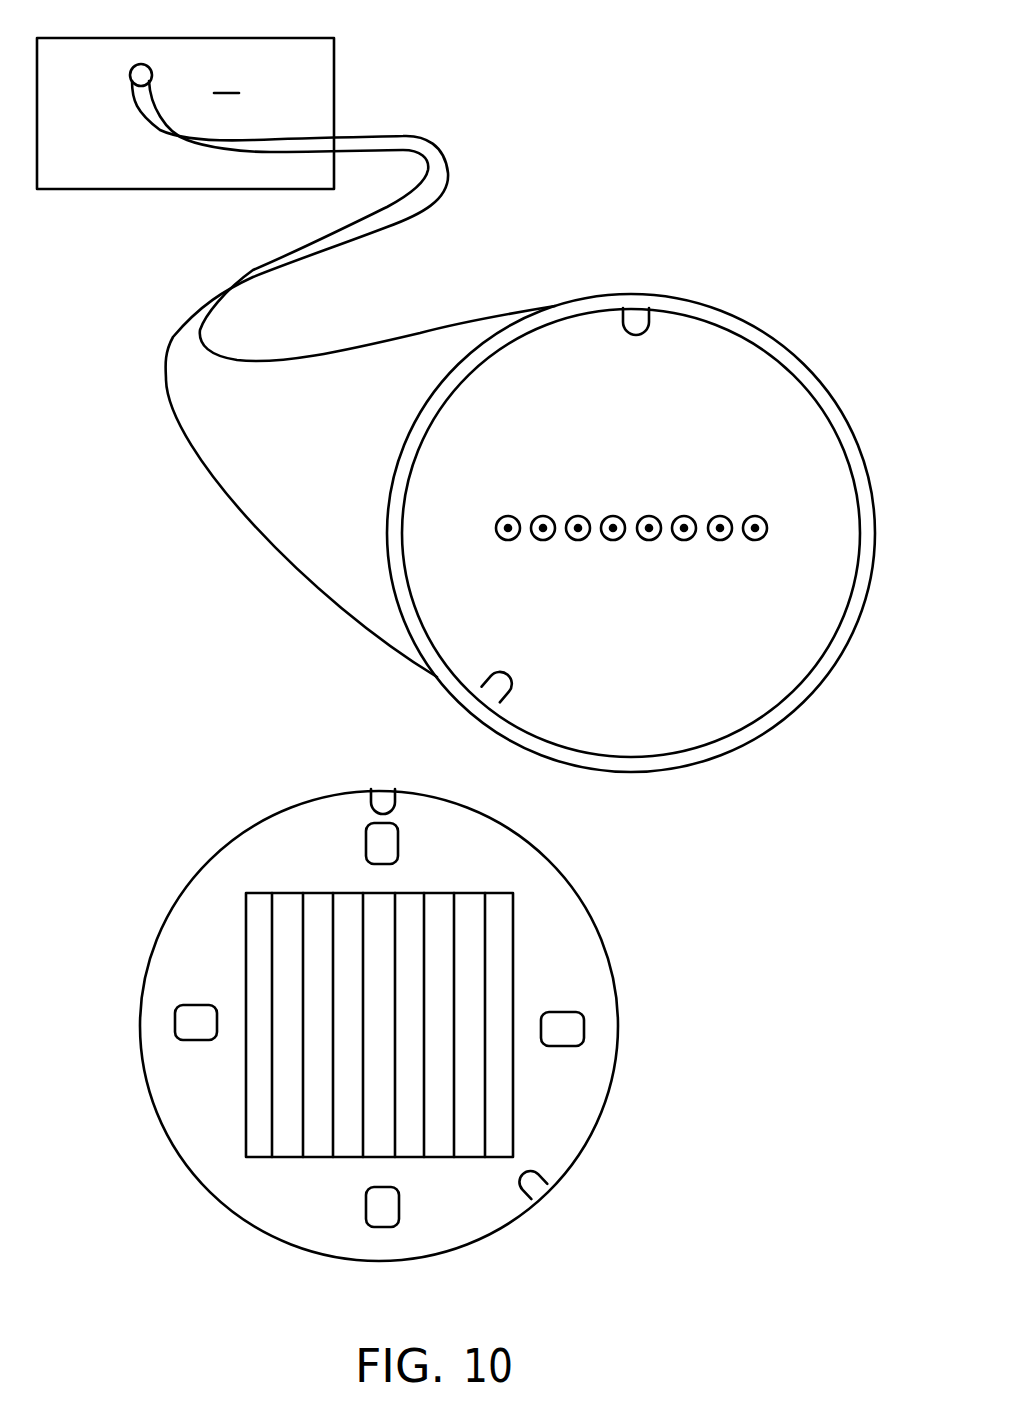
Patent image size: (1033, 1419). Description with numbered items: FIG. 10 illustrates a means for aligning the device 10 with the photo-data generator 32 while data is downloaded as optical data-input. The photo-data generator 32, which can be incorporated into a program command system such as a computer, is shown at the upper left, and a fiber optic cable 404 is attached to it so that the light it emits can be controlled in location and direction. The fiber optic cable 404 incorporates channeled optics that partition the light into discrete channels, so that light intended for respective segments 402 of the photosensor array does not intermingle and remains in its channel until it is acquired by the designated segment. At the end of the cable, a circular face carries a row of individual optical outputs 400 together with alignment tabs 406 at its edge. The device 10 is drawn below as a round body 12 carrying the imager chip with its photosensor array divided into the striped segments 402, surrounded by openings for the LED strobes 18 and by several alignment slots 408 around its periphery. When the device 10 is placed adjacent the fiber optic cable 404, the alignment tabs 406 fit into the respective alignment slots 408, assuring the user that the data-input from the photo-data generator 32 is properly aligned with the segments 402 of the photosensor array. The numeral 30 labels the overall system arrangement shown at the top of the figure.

The device 10 is at (434, 1014).
The imager chip 12 is at (579, 1083).
The LED strobes 18 is at (380, 1208).
The controller unit 30 is at (246, 113).
The photo-data generator 32 is at (226, 79).
The light sources 400 is at (723, 519).
The segments 402 is at (257, 930).
The fiber optic cable 404 is at (450, 340).
The alignment tabs 406 is at (633, 317).
The alignment slots 408 is at (378, 800).